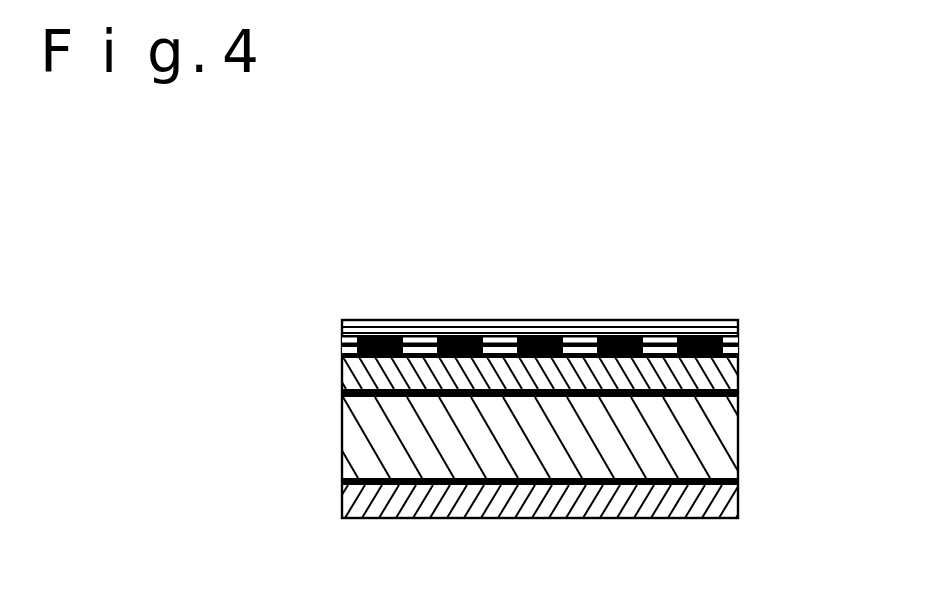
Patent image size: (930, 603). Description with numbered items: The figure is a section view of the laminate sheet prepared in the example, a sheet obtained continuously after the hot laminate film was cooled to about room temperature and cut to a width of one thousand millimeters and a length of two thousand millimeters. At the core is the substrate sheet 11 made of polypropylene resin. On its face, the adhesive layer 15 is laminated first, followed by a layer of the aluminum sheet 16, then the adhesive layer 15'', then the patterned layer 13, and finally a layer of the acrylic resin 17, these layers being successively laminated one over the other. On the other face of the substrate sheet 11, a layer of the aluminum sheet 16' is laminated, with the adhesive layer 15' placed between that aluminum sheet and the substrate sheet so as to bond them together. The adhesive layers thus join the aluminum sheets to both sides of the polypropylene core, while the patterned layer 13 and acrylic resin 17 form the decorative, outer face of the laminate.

The substrate sheet of a polypropylene resin 11 is at (715, 437).
The patterned layer 13 is at (382, 336).
The adhesive layer 15 is at (492, 383).
The adhesive layer 15' is at (483, 468).
The adhesive layer 15'' is at (485, 336).
The layer of an aluminum sheet 16 is at (560, 367).
The layer of an aluminum sheet 16' is at (550, 530).
The layer of an acrylic resin 17 is at (738, 327).